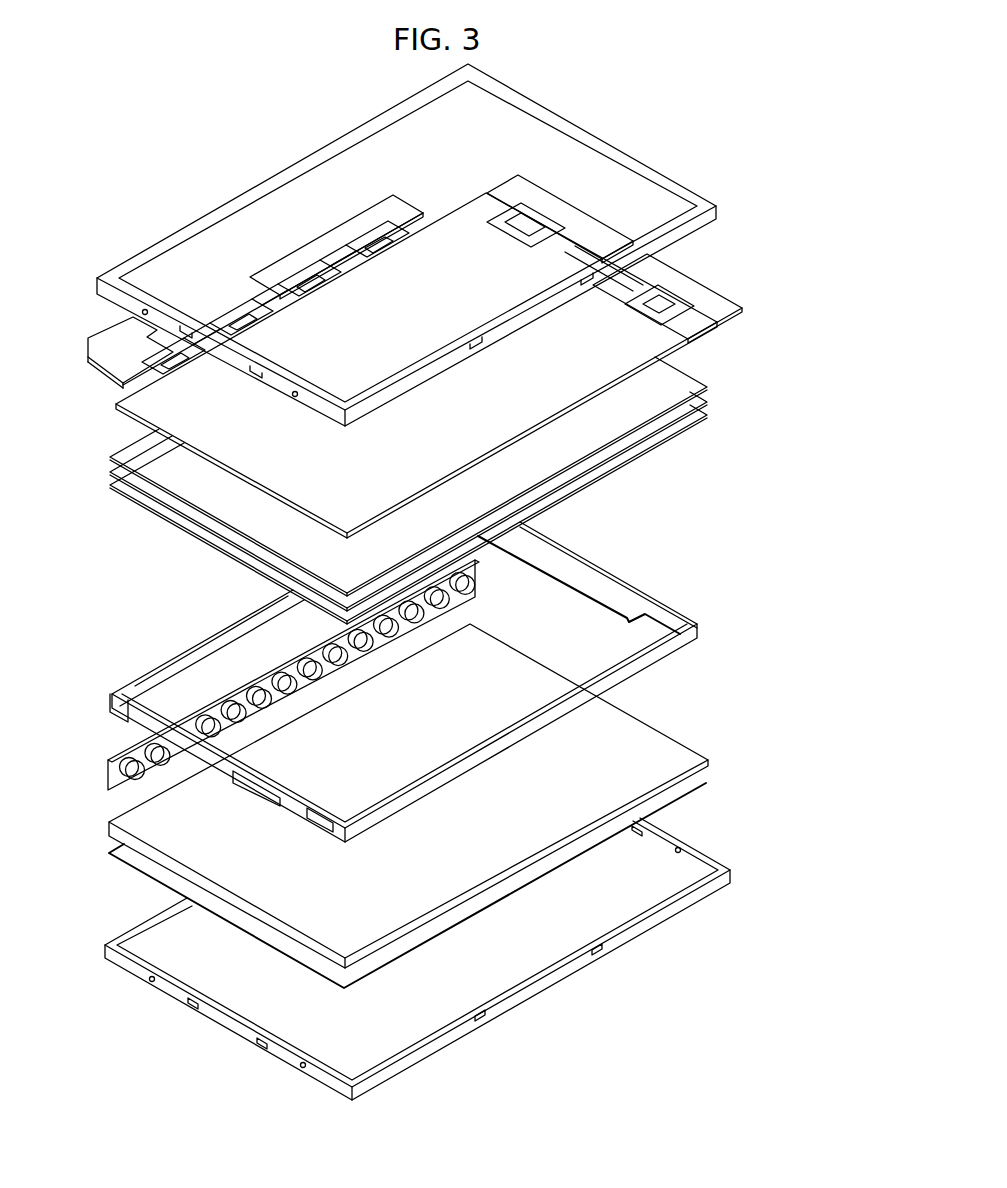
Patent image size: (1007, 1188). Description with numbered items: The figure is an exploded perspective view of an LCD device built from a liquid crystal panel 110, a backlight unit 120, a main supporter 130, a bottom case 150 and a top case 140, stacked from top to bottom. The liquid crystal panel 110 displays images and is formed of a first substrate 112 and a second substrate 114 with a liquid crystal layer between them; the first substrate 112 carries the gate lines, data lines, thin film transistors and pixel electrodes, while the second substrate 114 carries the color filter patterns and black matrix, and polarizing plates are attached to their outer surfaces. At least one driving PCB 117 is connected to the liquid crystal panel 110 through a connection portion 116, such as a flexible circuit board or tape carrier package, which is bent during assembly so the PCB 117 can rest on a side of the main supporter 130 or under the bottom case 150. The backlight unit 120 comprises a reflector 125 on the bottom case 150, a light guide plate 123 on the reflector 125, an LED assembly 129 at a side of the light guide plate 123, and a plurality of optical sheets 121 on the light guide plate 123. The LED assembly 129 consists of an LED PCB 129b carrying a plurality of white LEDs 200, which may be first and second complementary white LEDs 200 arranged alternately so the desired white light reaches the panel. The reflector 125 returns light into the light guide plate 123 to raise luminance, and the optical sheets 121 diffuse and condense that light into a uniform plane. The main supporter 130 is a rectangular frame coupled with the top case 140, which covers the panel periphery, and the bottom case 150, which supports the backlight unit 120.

The liquid crystal panel 110 is at (806, 262).
The first substrate 112 is at (745, 306).
The second substrate 114 is at (667, 333).
The connection portion 116 is at (503, 217).
The driving PCB 117 is at (358, 229).
The backlight unit 120 is at (789, 797).
The optical sheets 121 is at (712, 382).
The light guide plate 123 is at (712, 762).
The reflector 125 is at (712, 783).
The LED assembly 129 is at (680, 490).
The LED PCB 129b is at (480, 570).
The white LEDs 200 is at (480, 590).
The main supporter 130 is at (147, 718).
The top case 140 is at (703, 194).
The bottom case 150 is at (558, 982).